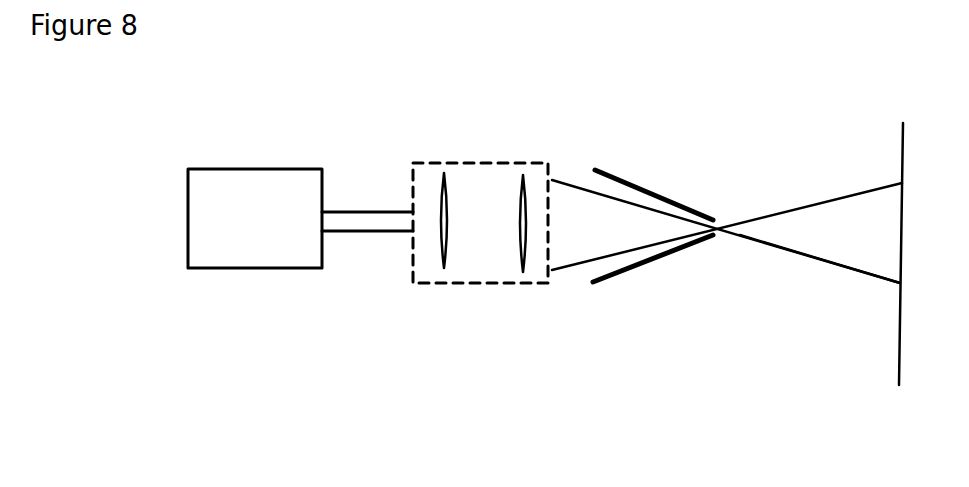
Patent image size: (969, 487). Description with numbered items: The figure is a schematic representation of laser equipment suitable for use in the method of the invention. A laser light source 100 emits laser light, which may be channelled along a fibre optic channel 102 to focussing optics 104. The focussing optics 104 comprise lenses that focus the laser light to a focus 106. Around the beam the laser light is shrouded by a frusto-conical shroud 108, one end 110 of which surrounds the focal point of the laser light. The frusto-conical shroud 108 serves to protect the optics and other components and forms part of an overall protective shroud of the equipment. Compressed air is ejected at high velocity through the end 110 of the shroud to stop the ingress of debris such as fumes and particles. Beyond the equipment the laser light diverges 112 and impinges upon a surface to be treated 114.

The laser light source 100 is at (259, 224).
The fibre optic channel 102 is at (392, 220).
The focussing optics 104 is at (513, 263).
The focus 106 is at (717, 238).
The frusto-conical shroud 108 is at (658, 260).
The end of the shroud 110 is at (710, 215).
The diverging laser light 112 is at (803, 230).
The surface to be treated 114 is at (902, 238).